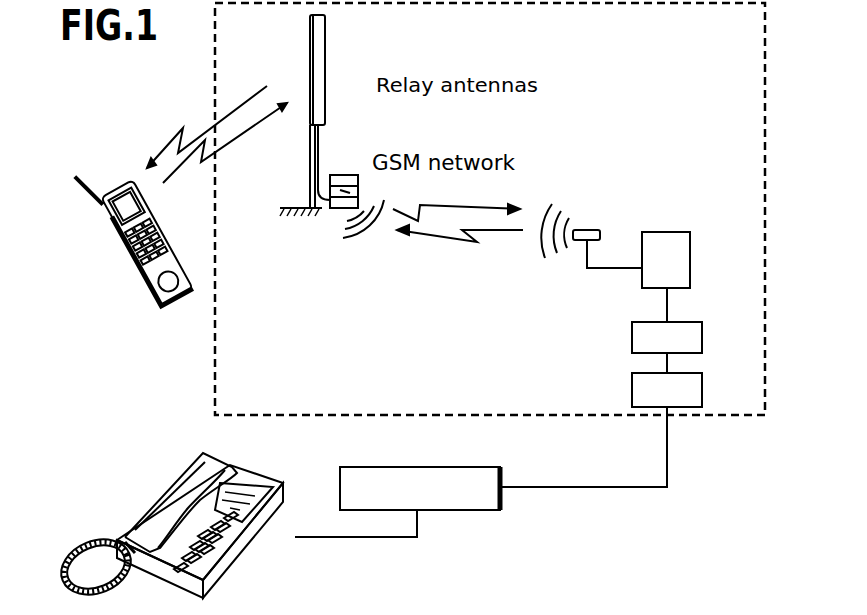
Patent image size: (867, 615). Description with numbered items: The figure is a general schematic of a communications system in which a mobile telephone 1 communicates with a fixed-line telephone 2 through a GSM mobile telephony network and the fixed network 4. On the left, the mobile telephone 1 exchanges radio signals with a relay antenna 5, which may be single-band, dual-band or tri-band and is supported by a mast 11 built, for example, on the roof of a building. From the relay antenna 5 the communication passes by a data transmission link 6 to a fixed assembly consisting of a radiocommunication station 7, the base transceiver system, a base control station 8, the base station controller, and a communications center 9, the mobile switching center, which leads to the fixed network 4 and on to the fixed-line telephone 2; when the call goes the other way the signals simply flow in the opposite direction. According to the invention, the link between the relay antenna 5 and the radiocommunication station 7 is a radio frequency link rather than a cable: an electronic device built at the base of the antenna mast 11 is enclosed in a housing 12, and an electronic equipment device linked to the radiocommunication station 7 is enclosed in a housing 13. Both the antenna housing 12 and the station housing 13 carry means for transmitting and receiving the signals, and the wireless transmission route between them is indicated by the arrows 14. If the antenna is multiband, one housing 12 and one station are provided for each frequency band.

The mobile telephone 1 is at (120, 263).
The fixed-line telephone 2 is at (240, 550).
The fixed network 4 is at (483, 465).
The relay antenna 5 is at (318, 72).
The data transmission link 6 is at (474, 195).
The radiocommunication station 7 is at (675, 232).
The base control station 8 is at (702, 334).
The communications center 9 is at (702, 387).
The mast 11 is at (310, 170).
The housing 12 is at (348, 178).
The housing 13 is at (588, 232).
The transmission route of wireless signals 14 is at (457, 242).